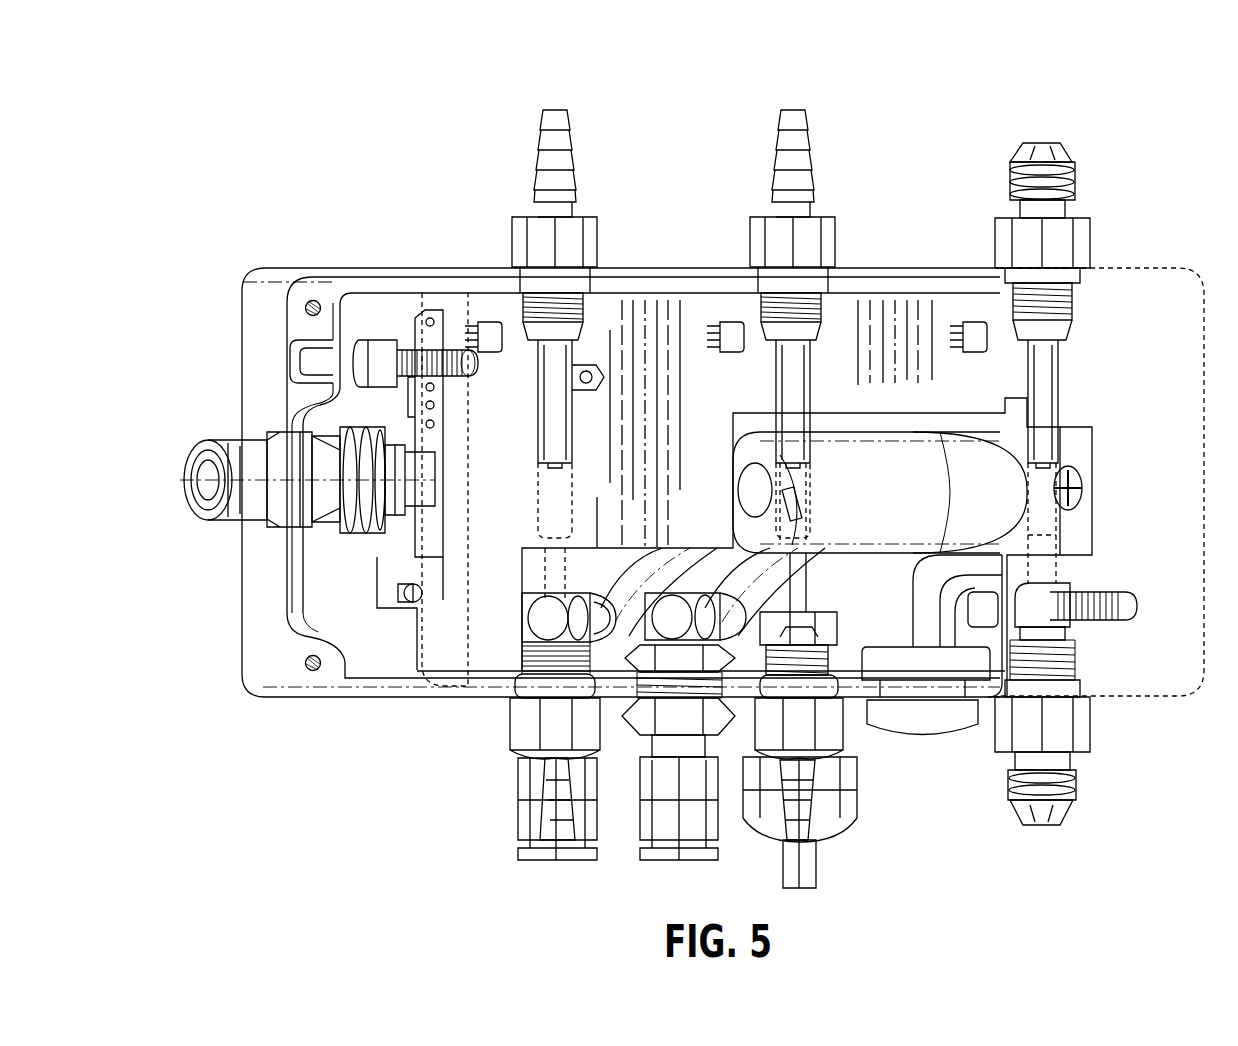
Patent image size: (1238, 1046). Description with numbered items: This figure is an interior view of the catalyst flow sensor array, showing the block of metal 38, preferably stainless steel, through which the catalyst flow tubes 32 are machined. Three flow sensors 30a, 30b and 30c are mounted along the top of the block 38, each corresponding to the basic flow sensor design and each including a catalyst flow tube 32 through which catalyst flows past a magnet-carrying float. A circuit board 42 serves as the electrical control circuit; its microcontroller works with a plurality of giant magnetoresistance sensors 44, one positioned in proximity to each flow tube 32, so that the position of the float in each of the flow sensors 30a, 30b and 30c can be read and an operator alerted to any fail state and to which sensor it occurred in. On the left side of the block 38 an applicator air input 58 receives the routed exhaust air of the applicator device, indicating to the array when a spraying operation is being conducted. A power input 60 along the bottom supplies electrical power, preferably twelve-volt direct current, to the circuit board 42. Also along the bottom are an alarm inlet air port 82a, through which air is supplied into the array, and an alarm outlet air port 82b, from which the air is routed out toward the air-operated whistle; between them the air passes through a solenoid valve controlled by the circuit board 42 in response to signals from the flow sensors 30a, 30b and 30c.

The flow sensor 30a is at (1040, 133).
The flow sensor 30b is at (783, 94).
The flow sensor 30c is at (550, 96).
The catalyst flow tube 32 is at (538, 496).
The block of metal 38 is at (268, 292).
The circuit board 42 is at (405, 660).
The giant magnetoresistance sensor 44 is at (484, 330).
The applicator air input 58 is at (212, 446).
The power input 60 is at (844, 788).
The alarm inlet air port 82a is at (525, 862).
The alarm outlet air port 82b is at (648, 862).